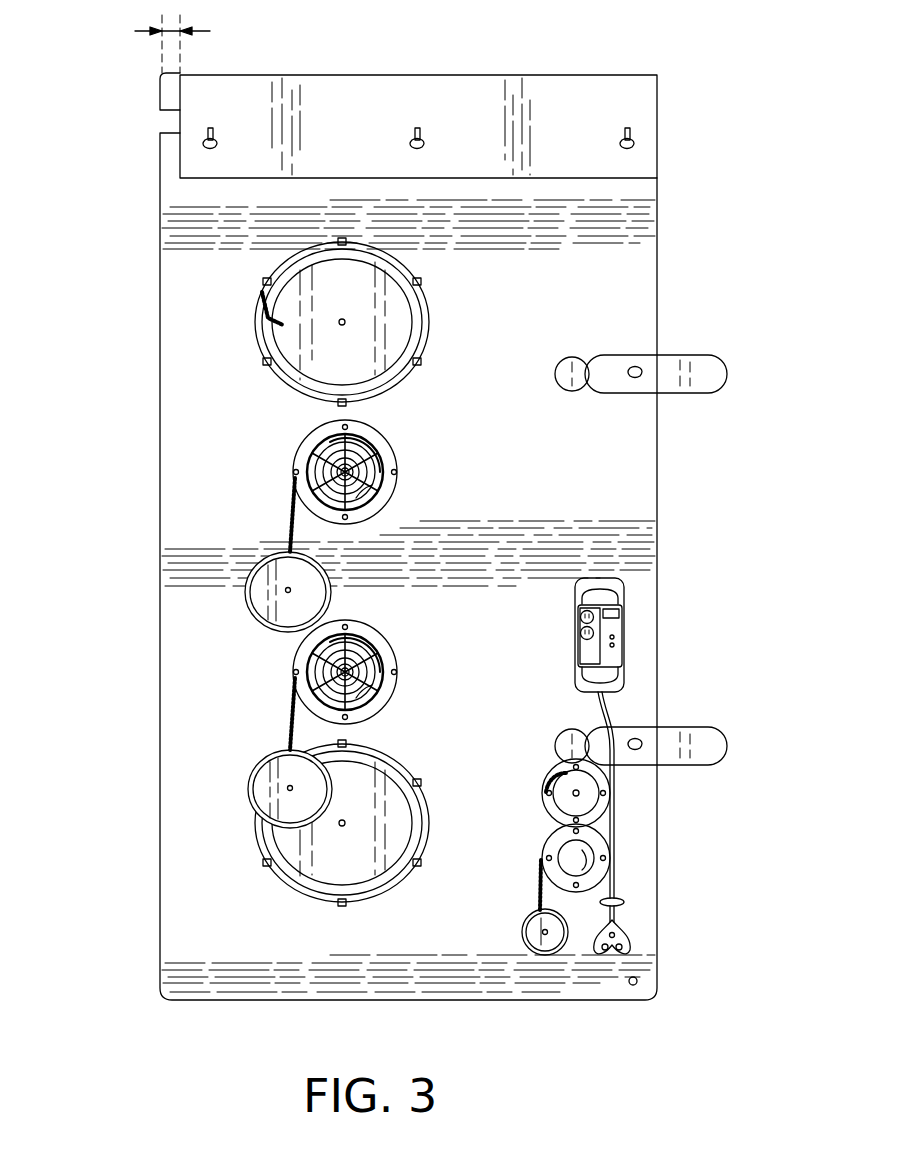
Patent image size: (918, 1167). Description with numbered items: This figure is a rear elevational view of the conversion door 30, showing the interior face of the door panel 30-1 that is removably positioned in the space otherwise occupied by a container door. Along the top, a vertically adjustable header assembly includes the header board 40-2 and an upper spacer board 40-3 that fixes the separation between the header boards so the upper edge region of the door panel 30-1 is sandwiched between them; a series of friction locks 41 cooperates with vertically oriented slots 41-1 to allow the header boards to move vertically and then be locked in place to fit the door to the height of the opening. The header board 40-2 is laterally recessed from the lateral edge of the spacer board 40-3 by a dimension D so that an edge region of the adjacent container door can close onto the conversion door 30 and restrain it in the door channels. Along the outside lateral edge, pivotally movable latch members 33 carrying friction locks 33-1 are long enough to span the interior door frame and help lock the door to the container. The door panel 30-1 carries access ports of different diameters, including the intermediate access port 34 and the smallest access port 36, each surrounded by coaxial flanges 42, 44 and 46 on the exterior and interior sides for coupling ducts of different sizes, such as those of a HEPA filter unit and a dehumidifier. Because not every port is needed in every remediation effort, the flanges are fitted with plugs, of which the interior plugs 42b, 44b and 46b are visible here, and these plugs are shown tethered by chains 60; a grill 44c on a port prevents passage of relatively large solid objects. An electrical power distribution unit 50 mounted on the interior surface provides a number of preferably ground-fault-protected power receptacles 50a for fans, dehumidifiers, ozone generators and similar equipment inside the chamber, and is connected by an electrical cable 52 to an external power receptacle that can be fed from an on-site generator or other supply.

The conversion door 30 is at (125, 683).
The door panel 30-1 is at (572, 472).
The header board 40-2 is at (378, 111).
The upper spacer board 40-3 is at (166, 91).
The dimension D is at (160, 44).
The friction locks 41 is at (218, 143).
The vertically oriented slots 41-1 is at (236, 112).
The flanges 42 is at (410, 262).
The interior plug 42b is at (362, 304).
The chain 60 is at (258, 303).
The flanges 44 is at (383, 447).
The grill 44c is at (318, 448).
The access port 34 is at (370, 498).
The interior plug 44b is at (310, 616).
The latch members 33 is at (710, 374).
The friction locks 33-1 is at (630, 370).
The electrical power distribution unit 50 is at (626, 632).
The power receptacles 50a is at (580, 628).
The electrical cable 52 is at (628, 902).
The flanges 46 is at (545, 790).
The interior plug 46b is at (552, 800).
The access port 36 is at (590, 860).